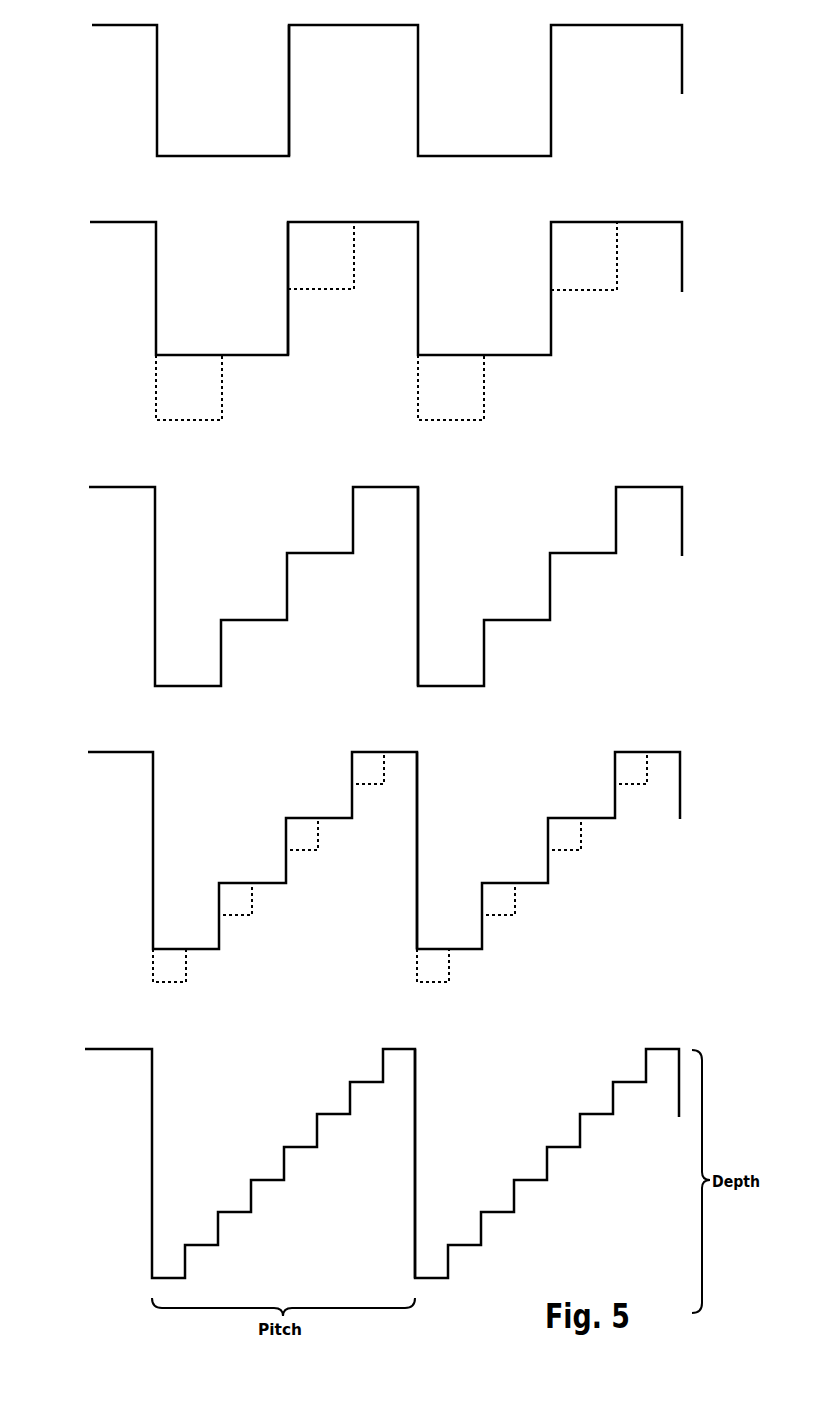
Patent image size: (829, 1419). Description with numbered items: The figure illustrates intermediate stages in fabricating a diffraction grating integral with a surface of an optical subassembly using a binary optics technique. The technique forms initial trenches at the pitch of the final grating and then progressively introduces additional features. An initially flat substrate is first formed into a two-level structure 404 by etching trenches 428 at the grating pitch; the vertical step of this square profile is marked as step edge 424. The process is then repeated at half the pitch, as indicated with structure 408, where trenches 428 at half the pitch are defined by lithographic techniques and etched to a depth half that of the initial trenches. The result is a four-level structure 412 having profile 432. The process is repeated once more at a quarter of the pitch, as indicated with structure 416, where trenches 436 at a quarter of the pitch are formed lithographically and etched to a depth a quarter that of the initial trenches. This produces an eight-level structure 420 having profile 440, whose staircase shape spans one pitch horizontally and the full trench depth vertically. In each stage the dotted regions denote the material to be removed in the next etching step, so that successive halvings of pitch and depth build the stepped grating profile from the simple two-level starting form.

The two-level structure 404 is at (107, 90).
The structure 408 is at (106, 312).
The four-level structure 412 is at (105, 583).
The structure 416 is at (104, 846).
The eight-level structure 420 is at (103, 1167).
The step edge of square wave profile 424 is at (289, 132).
The trenches 428 is at (354, 248).
The profile 432 is at (418, 553).
The trenches 436 is at (155, 982).
The profile 440 is at (416, 1131).